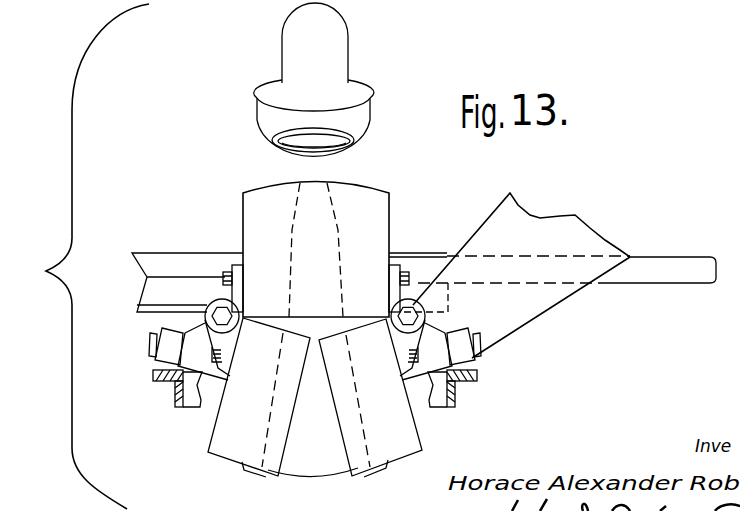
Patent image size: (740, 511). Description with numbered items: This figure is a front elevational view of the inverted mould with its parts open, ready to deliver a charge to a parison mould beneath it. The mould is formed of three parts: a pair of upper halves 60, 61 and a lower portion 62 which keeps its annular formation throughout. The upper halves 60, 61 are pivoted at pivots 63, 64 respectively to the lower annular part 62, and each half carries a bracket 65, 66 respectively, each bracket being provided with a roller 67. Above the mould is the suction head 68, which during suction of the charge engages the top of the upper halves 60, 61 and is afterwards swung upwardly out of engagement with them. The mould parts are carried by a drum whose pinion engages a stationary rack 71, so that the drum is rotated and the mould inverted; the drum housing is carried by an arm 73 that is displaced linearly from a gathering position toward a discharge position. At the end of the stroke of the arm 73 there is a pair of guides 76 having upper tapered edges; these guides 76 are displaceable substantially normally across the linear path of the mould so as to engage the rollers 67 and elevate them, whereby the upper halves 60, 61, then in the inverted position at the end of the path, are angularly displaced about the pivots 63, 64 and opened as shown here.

The upper half 60 is at (245, 448).
The upper half 61 is at (393, 447).
The lower portion 62 is at (382, 220).
The pivot 63 is at (228, 320).
The pivot 64 is at (417, 308).
The bracket 65 is at (212, 363).
The bracket 66 is at (423, 358).
The roller 67 is at (162, 342).
The suction head 68 is at (345, 63).
The stationary rack 71 is at (153, 302).
The arm 73 is at (508, 207).
The guide 76 is at (177, 395).